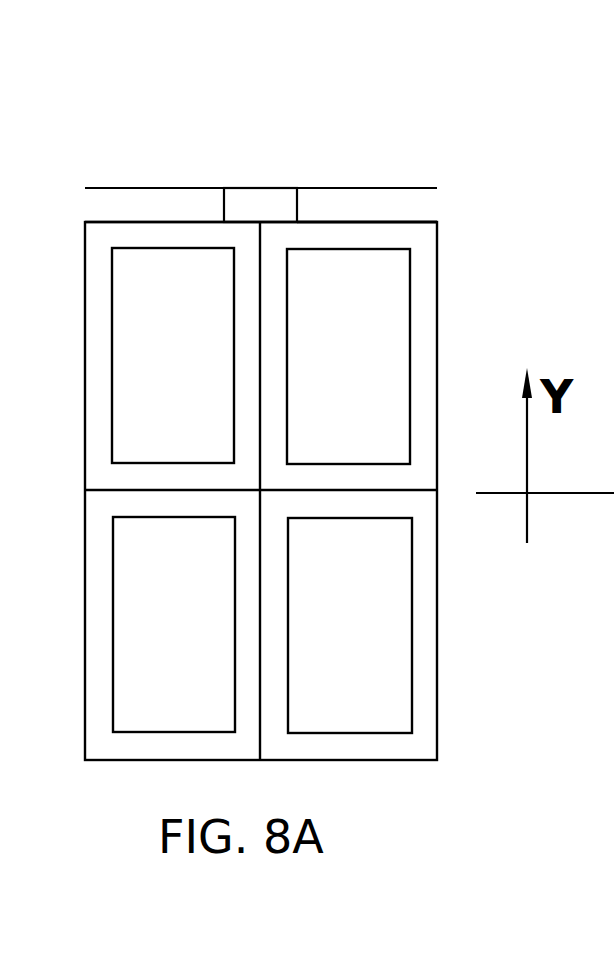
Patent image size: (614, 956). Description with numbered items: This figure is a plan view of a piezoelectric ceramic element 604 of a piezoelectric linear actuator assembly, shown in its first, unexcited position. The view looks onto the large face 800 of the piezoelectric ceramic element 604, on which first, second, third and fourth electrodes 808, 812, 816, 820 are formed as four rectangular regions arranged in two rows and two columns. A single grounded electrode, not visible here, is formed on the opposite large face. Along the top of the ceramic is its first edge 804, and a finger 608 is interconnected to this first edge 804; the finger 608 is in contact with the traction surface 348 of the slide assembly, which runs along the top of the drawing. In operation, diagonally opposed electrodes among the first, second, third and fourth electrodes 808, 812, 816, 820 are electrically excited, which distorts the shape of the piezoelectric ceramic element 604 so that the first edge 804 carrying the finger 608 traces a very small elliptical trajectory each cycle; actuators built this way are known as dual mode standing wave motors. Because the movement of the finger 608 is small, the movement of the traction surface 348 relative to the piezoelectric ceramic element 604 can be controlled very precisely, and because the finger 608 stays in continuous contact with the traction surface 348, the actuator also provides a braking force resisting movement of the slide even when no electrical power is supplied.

The traction surface 348 is at (173, 188).
The finger 608 is at (268, 188).
The first edge 804 is at (338, 222).
The piezoelectric ceramic element 604 is at (390, 222).
The large face 800 is at (423, 253).
The first electrode 808 is at (215, 380).
The second electrode 812 is at (392, 383).
The third electrode 816 is at (217, 648).
The fourth electrode 820 is at (393, 648).